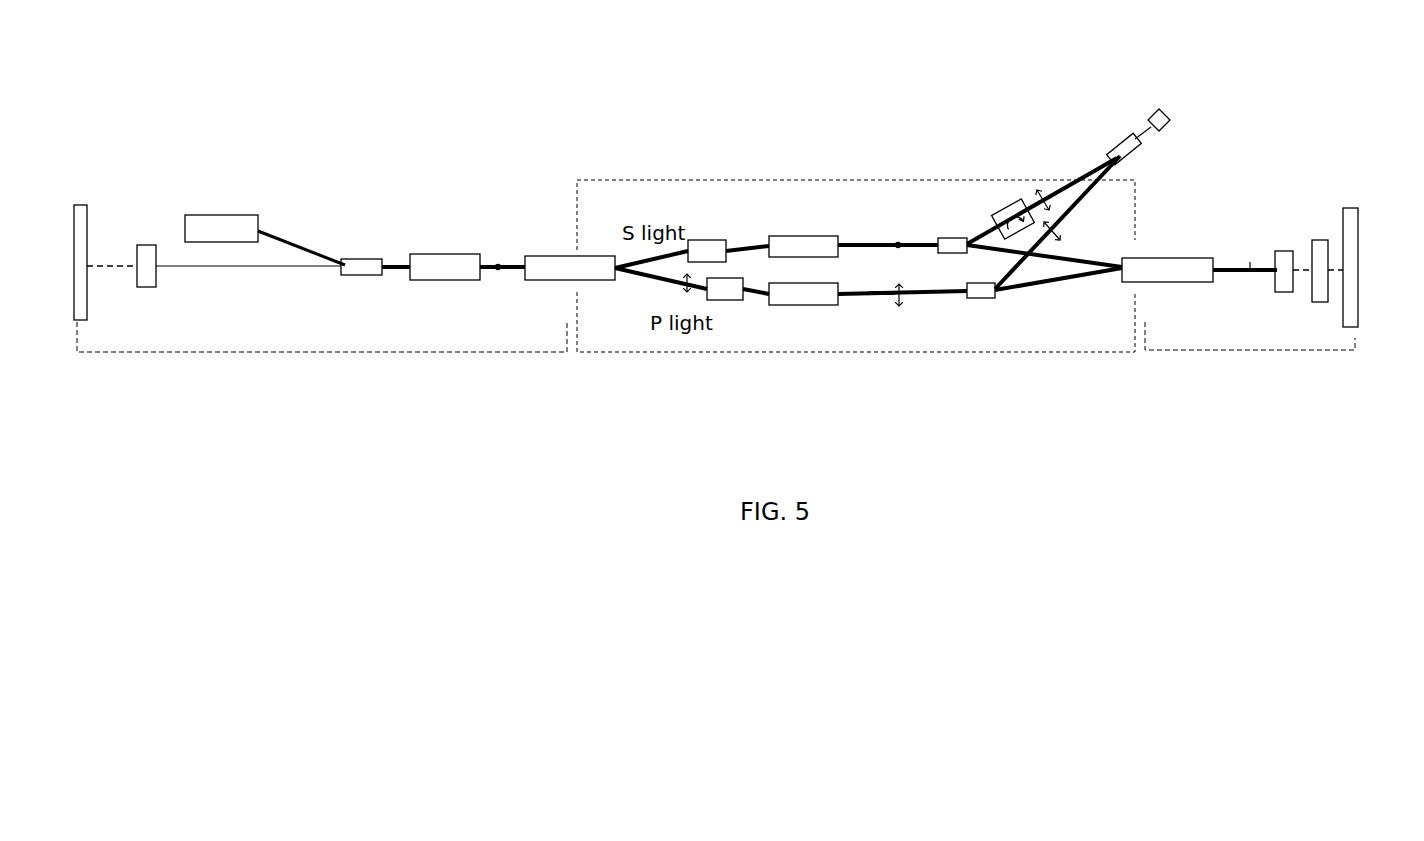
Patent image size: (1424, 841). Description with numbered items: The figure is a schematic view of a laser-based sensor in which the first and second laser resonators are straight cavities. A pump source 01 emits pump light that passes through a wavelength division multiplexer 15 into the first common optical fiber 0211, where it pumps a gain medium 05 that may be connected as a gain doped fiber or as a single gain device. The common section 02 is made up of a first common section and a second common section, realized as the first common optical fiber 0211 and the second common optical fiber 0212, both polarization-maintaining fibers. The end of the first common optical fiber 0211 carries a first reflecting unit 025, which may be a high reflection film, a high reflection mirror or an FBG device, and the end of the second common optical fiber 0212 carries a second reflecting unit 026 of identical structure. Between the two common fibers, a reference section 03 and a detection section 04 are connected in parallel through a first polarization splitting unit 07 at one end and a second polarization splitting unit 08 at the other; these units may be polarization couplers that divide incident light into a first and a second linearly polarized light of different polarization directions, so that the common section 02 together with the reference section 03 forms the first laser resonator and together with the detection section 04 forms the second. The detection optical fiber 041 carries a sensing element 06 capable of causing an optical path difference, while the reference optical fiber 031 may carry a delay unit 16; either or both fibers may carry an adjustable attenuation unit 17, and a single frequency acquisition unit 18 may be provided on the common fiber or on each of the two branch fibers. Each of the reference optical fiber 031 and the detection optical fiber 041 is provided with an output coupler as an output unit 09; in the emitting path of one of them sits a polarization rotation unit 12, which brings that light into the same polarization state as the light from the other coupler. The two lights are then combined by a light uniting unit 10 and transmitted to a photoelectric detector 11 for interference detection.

The first reflecting unit 025 is at (104, 199).
The pump source 01 is at (265, 172).
The wavelength division multiplexer 15 is at (374, 192).
The gain medium 05 is at (445, 194).
The first common optical fiber 0211 is at (527, 187).
The first polarization splitting unit 07 is at (570, 196).
The adjustable attenuation unit 17 is at (734, 246).
The sensing element 06 is at (803, 174).
The delay unit 16 is at (808, 340).
The reference section 03 is at (902, 336).
The reference optical fiber 031 is at (905, 352).
The detection optical fiber 041 is at (915, 168).
The output unit 09 is at (985, 317).
The polarization rotation unit 12 is at (1011, 163).
The light uniting unit 10 is at (1113, 99).
The photoelectric detector 11 is at (1181, 76).
The second polarization splitting unit 08 is at (1182, 188).
The second common optical fiber 0212 is at (1281, 183).
The single frequency acquisition unit 18 is at (1338, 196).
The second reflecting unit 026 is at (1377, 204).
The detection section 04 is at (856, 260).
The common section 02 is at (716, 354).